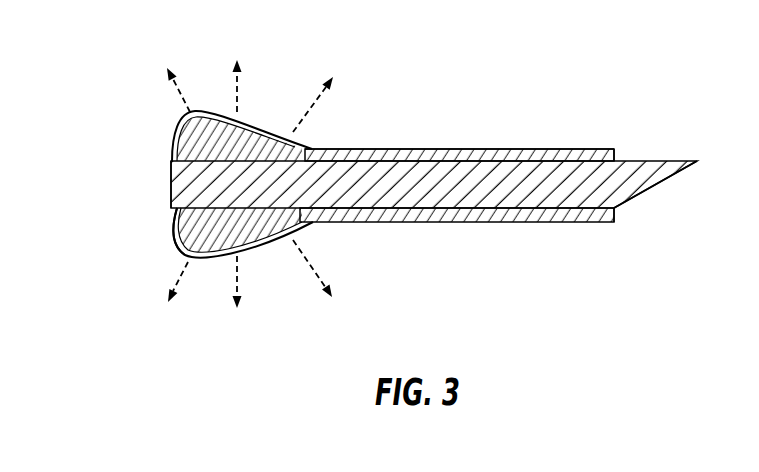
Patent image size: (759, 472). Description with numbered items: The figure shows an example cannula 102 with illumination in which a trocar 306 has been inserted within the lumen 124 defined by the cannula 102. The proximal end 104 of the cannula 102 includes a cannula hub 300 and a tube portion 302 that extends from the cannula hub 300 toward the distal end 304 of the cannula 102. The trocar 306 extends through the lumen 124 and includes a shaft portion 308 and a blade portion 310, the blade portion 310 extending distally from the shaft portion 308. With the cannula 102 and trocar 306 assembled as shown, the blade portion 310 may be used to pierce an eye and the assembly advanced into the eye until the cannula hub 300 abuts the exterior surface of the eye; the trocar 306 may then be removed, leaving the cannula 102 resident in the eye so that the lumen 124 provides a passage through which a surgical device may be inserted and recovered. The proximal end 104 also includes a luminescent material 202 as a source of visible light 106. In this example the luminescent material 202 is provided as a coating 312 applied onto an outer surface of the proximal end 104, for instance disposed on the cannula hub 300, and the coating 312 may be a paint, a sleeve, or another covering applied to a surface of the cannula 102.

The cannula 102 is at (621, 63).
The proximal end 104 is at (290, 274).
The visible light 106 is at (181, 93).
The lumen 124 is at (378, 162).
The luminescent material 202 is at (170, 232).
The cannula hub 300 is at (248, 232).
The tube portion 302 is at (403, 223).
The distal end 304 is at (581, 234).
The trocar 306 is at (450, 146).
The shaft portion 308 is at (518, 160).
The blade portion 310 is at (647, 160).
The coating 312 is at (218, 258).